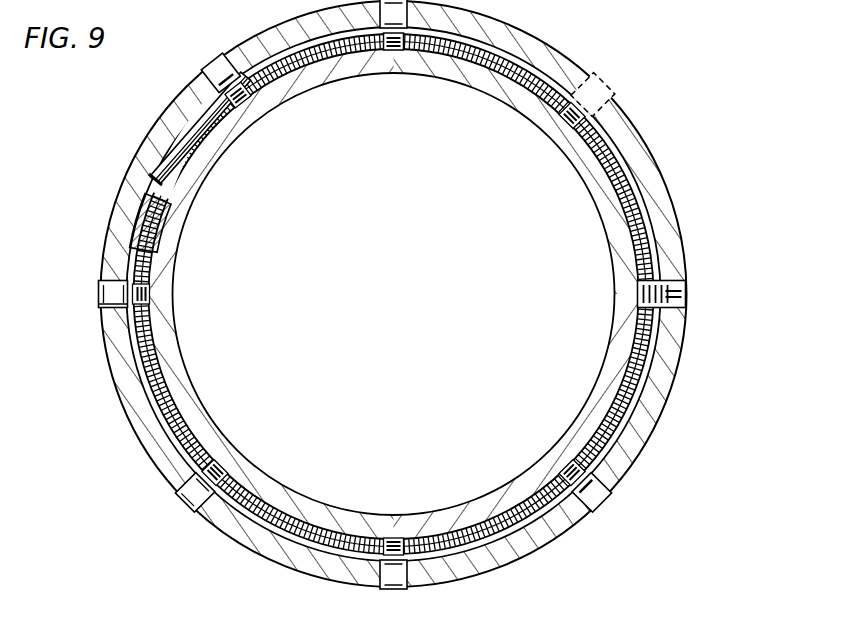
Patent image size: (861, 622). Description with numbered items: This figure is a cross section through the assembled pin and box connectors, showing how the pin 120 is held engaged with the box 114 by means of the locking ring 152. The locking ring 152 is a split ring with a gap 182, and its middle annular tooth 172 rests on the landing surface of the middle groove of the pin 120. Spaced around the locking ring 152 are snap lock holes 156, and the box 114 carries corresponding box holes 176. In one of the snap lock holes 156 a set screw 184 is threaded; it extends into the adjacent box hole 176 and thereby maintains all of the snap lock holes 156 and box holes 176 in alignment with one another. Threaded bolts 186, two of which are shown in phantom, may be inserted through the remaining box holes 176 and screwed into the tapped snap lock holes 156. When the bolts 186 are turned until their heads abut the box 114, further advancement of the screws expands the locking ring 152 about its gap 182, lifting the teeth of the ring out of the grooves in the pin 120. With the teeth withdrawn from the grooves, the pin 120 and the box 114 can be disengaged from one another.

The box 114 is at (650, 132).
The pin 120 is at (472, 84).
The locking ring 152 is at (632, 185).
The snap lock holes 156 is at (397, 44).
The middle annular tooth 172 is at (182, 162).
The box holes 176 is at (110, 301).
The gap 182 is at (160, 196).
The set screw 184 is at (697, 285).
The threaded bolts 186 is at (622, 66).